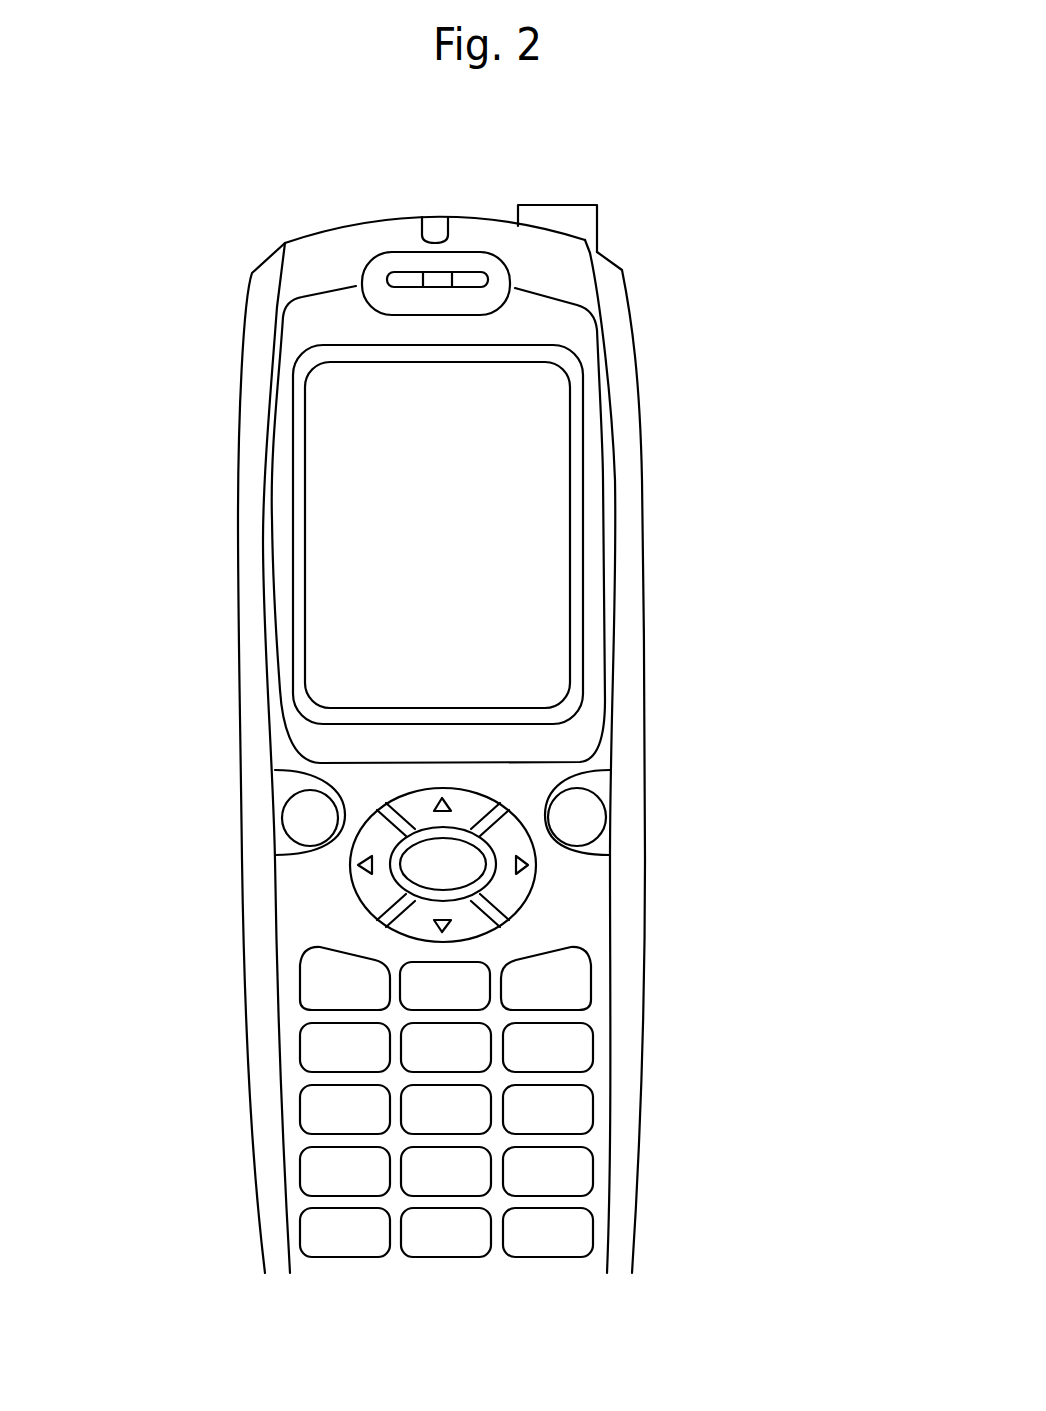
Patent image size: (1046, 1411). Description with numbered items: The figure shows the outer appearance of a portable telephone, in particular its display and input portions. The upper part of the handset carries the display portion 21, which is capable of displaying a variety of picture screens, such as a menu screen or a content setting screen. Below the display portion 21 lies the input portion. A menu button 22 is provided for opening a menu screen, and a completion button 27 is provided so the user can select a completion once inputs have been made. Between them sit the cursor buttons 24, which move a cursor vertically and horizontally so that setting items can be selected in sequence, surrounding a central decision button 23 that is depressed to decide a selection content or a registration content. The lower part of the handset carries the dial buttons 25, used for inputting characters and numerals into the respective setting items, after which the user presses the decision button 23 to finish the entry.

The display portion 21 is at (538, 447).
The menu button 22 is at (298, 813).
The decision button 23 is at (455, 860).
The cursor buttons 24 is at (452, 805).
The dial buttons 25 is at (670, 1025).
The completion button 27 is at (587, 813).